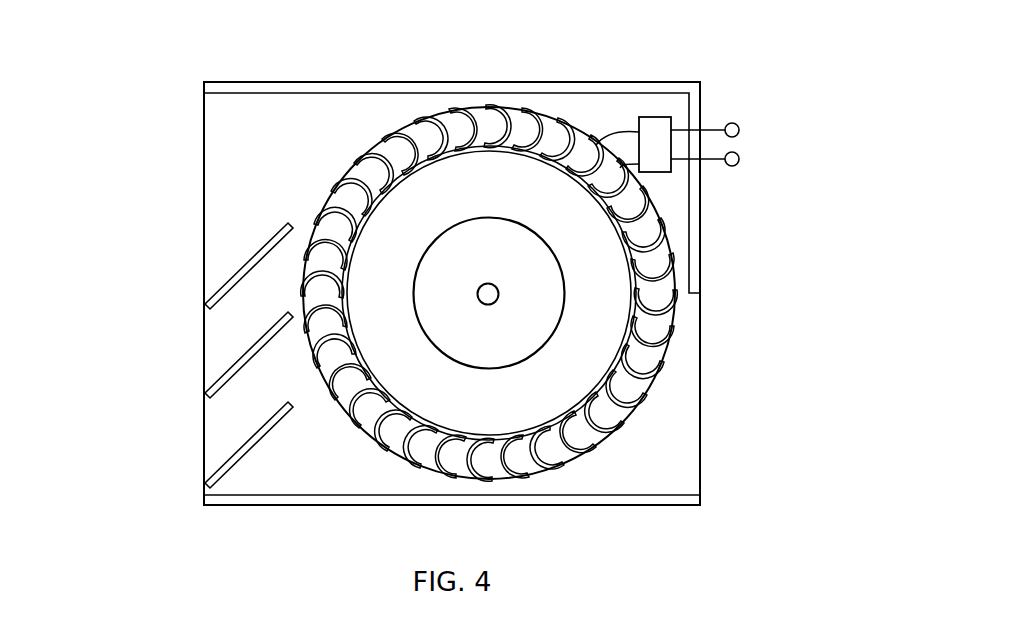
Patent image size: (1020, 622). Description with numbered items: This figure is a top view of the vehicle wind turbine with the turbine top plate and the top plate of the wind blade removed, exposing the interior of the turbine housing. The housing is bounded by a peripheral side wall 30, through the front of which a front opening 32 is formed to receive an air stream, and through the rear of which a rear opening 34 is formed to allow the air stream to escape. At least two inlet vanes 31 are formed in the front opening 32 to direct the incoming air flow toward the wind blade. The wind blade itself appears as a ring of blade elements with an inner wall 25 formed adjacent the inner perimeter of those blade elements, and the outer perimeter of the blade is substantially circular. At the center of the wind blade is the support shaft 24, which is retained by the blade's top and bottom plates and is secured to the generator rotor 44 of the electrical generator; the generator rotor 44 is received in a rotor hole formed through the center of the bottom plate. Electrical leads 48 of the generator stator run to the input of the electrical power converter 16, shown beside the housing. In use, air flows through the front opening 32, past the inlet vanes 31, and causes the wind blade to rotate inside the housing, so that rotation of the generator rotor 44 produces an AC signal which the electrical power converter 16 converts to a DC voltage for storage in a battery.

The electrical power converter 16 is at (663, 117).
The support shaft 24 is at (488, 283).
The inner wall 25 is at (423, 152).
The peripheral side wall 30 is at (703, 243).
The inlet vanes 31 is at (231, 300).
The front opening 32 is at (248, 173).
The rear opening 34 is at (675, 392).
The generator rotor 44 is at (533, 353).
The electrical leads 48 is at (632, 157).